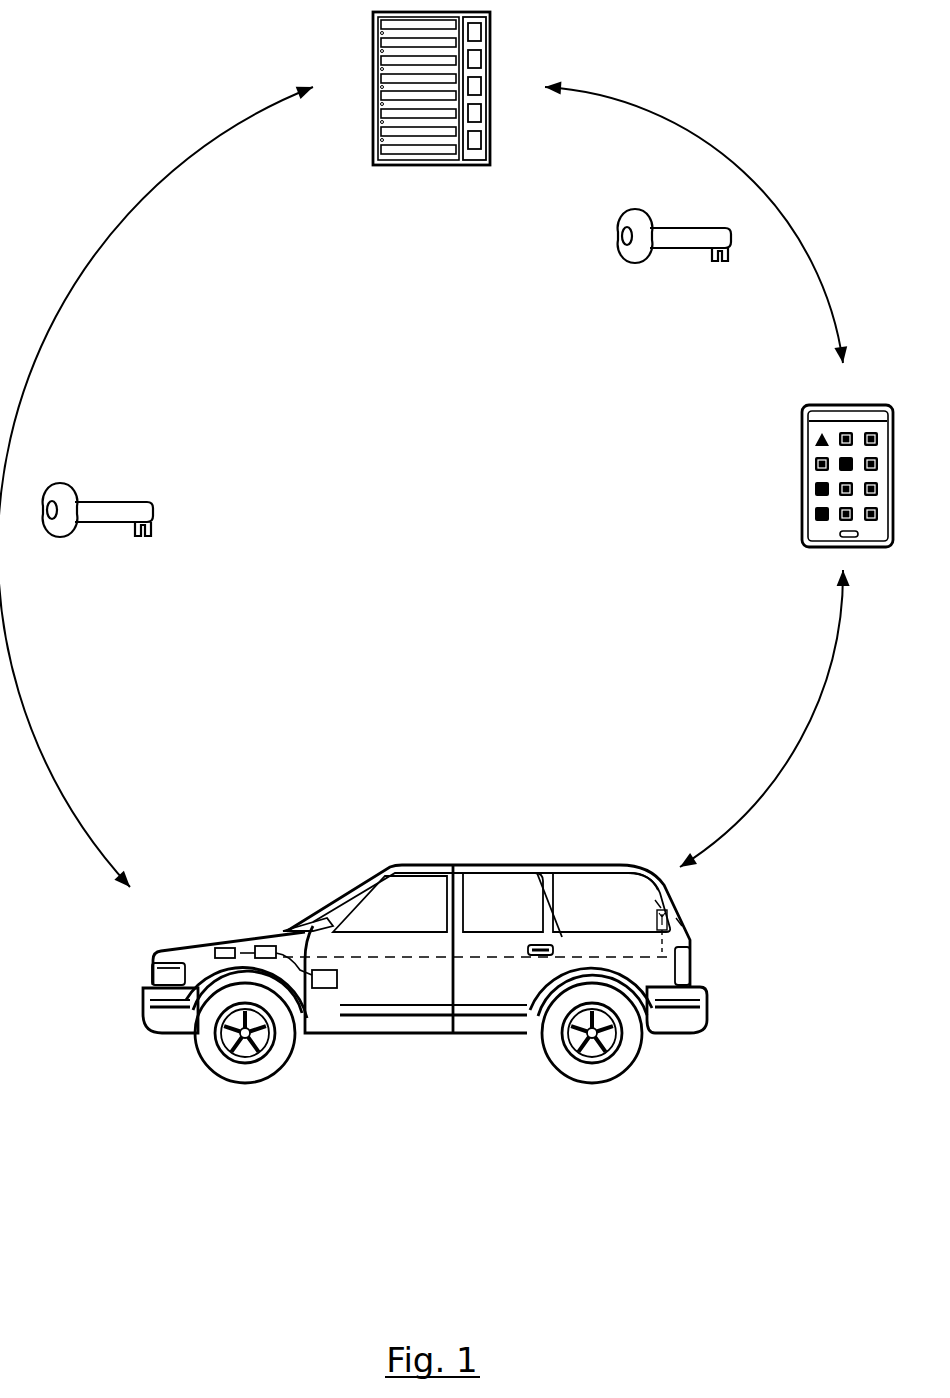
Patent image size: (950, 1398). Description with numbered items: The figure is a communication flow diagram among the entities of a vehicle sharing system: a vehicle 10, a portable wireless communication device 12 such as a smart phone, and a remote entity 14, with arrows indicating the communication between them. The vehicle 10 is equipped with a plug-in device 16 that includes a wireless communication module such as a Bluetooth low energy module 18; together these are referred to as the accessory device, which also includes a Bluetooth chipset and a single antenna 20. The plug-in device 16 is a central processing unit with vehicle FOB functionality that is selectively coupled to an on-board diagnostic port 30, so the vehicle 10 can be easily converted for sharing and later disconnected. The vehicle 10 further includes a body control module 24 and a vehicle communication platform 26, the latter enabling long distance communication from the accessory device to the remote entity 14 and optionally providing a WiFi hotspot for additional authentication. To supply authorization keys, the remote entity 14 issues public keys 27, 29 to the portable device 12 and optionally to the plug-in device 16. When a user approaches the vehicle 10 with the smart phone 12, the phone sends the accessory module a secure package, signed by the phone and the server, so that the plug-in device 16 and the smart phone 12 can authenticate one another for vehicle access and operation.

The vehicle 10 is at (420, 1035).
The portable wireless communication device 12 is at (792, 497).
The remote entity 14 is at (440, 166).
The plug-in device 16 is at (680, 922).
The Bluetooth low energy (BLE) module 18 is at (672, 916).
The single antenna 20 is at (658, 903).
The body control module (BCM) 24 is at (258, 946).
The vehicle communication platform (VCP) 26 is at (190, 946).
The public key 27 is at (695, 249).
The public key 29 is at (113, 503).
The on-board diagnostic (OBD) port 30 is at (325, 988).